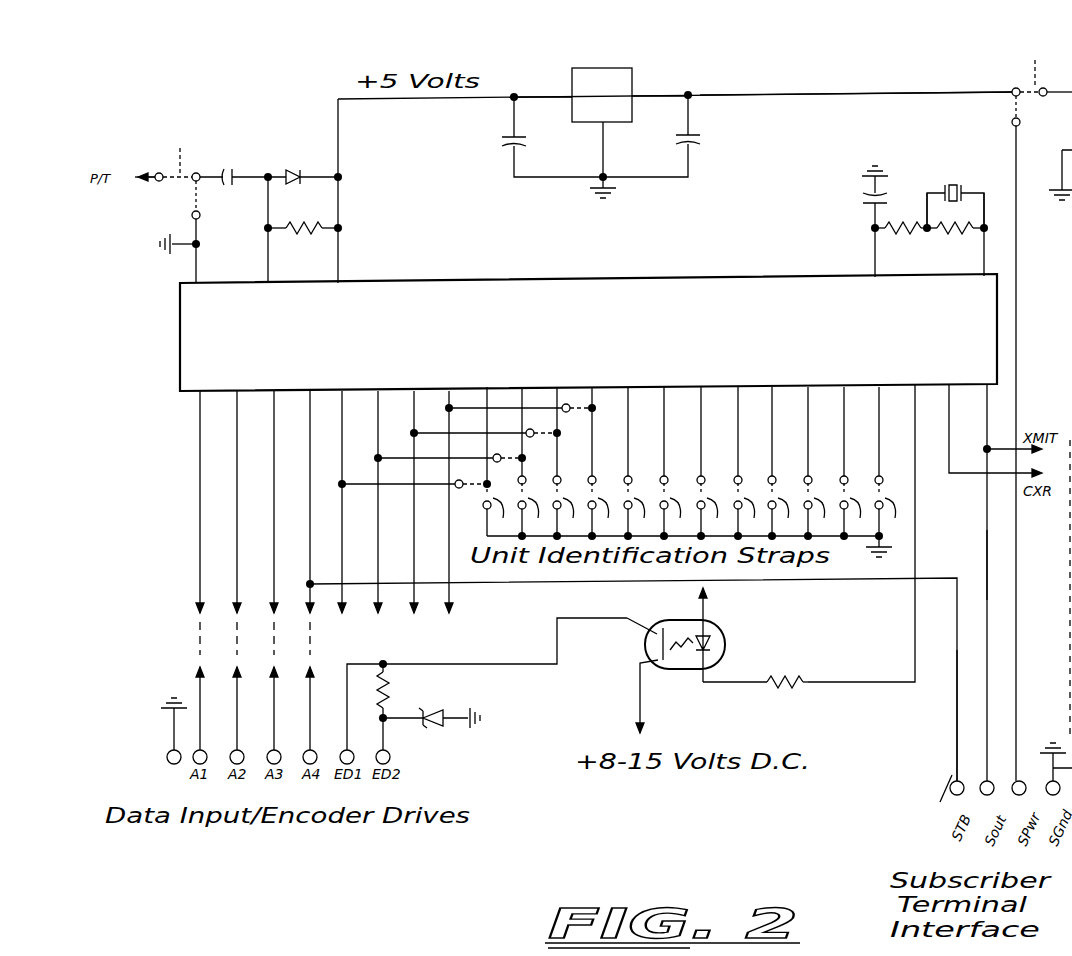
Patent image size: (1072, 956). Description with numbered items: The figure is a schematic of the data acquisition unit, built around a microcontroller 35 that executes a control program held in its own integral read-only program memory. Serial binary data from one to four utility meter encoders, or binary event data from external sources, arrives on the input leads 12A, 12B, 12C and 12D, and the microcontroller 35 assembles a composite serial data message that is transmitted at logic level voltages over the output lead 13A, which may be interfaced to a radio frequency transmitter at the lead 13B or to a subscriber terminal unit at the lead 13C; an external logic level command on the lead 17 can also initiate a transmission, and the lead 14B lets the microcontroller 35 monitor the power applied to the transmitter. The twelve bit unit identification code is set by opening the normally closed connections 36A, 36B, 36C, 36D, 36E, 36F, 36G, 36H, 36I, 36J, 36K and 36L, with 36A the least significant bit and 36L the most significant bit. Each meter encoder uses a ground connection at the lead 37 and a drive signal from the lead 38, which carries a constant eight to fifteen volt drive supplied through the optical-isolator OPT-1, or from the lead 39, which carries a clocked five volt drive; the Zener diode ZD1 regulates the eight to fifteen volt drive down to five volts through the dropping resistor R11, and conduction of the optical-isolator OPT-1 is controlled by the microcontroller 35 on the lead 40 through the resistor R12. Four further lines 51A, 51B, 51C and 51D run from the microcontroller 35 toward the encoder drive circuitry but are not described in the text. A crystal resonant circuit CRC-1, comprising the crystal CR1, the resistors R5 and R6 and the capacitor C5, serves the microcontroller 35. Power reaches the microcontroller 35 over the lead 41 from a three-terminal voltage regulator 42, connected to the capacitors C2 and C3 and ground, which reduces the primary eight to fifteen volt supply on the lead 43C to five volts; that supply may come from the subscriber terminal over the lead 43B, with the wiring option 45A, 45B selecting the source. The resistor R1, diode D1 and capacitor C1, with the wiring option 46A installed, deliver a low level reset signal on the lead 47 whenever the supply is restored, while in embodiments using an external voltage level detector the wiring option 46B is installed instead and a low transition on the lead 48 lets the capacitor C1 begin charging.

The microcontroller 35 is at (759, 280).
The lead 41 is at (340, 131).
The voltage regulator 42 is at (622, 82).
The capacitor C1 is at (229, 166).
The capacitor C2 is at (703, 139).
The capacitor C3 is at (504, 142).
The capacitor C5 is at (864, 197).
The diode D1 is at (292, 165).
The resistor R1 is at (308, 224).
The resistor R5 is at (952, 236).
The resistor R6 is at (902, 236).
The dropping resistor R11 is at (392, 689).
The resistor R12 is at (790, 688).
The crystal CR1 is at (956, 185).
The crystal resonant circuit CRC-1 is at (950, 178).
The Zener diode ZD1 is at (442, 704).
The optical-isolator OPT-1 is at (730, 636).
The lead 43B is at (1015, 256).
The lead 43C is at (898, 92).
The wiring option 45A is at (1041, 68).
The wiring option 45B is at (1026, 112).
The wiring option 46A is at (198, 209).
The wiring option 46B is at (174, 149).
The lead 47 is at (268, 245).
The lead 48 is at (152, 182).
The input lead 12A is at (199, 450).
The input lead 12B is at (237, 462).
The input lead 12C is at (273, 462).
The input lead 12D is at (309, 449).
The output lead 13A is at (984, 400).
The lead 13B is at (993, 443).
The lead 13C is at (985, 556).
The lead 14B is at (973, 476).
The lead 17 is at (955, 738).
The normally closed connection 36A is at (504, 461).
The normally closed connection 36B is at (539, 463).
The normally closed connection 36C is at (574, 463).
The normally closed connection 36D is at (610, 463).
The normally closed connection 36E is at (645, 463).
The normally closed connection 36F is at (680, 463).
The normally closed connection 36G is at (719, 463).
The normally closed connection 36H is at (756, 463).
The normally closed connection 36I is at (788, 463).
The normally closed connection 36J is at (824, 463).
The normally closed connection 36K is at (861, 463).
The normally closed connection 36L is at (888, 498).
The lead 37 is at (170, 727).
The lead 38 is at (347, 719).
The lead 39 is at (385, 737).
The lead 40 is at (915, 618).
The encoder drive line 51A is at (348, 596).
The encoder drive line 51B is at (382, 596).
The encoder drive line 51C is at (418, 596).
The encoder drive line 51D is at (455, 596).